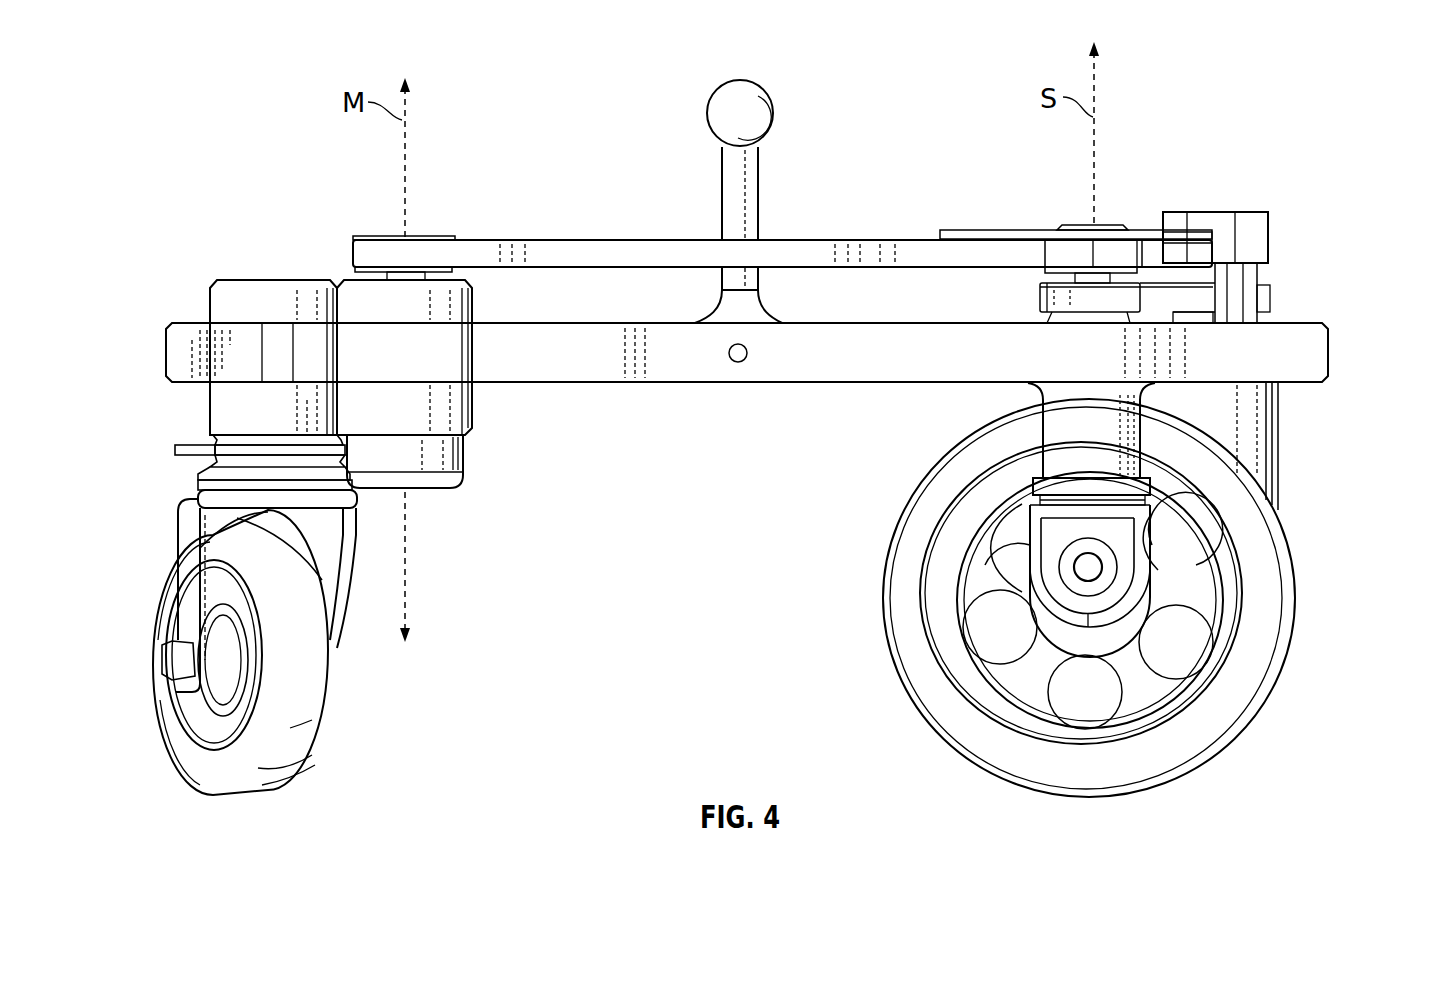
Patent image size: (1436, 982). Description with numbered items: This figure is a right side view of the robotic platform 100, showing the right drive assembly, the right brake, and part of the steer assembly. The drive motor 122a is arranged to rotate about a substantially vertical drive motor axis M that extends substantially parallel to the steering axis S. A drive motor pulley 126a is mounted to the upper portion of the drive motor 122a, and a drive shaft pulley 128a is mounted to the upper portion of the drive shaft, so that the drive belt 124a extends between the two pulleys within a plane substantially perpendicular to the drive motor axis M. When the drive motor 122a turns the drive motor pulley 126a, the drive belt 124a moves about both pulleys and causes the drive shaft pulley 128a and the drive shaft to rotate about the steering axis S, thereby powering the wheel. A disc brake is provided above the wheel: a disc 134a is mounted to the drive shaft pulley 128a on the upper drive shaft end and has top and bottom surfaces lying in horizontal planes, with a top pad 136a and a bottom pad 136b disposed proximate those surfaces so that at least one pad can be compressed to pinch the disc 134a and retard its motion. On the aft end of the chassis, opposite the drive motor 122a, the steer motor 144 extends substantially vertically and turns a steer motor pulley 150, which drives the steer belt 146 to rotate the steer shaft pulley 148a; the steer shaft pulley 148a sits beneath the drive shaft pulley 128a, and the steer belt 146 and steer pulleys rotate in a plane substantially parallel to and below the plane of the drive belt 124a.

The robotic platform 100 is at (1306, 93).
The drive motor 122a is at (463, 452).
The drive belt 124a is at (815, 248).
The drive motor pulley 126a is at (358, 240).
The drive shaft pulley 128a is at (1140, 268).
The disc 134a is at (985, 232).
The top pad 136a is at (1200, 242).
The bottom pad 136b is at (1212, 247).
The steer motor 144 is at (1268, 477).
The steer belt 146 is at (1153, 297).
The steer shaft pulley 148a is at (1053, 318).
The steer motor pulley 150 is at (1237, 322).